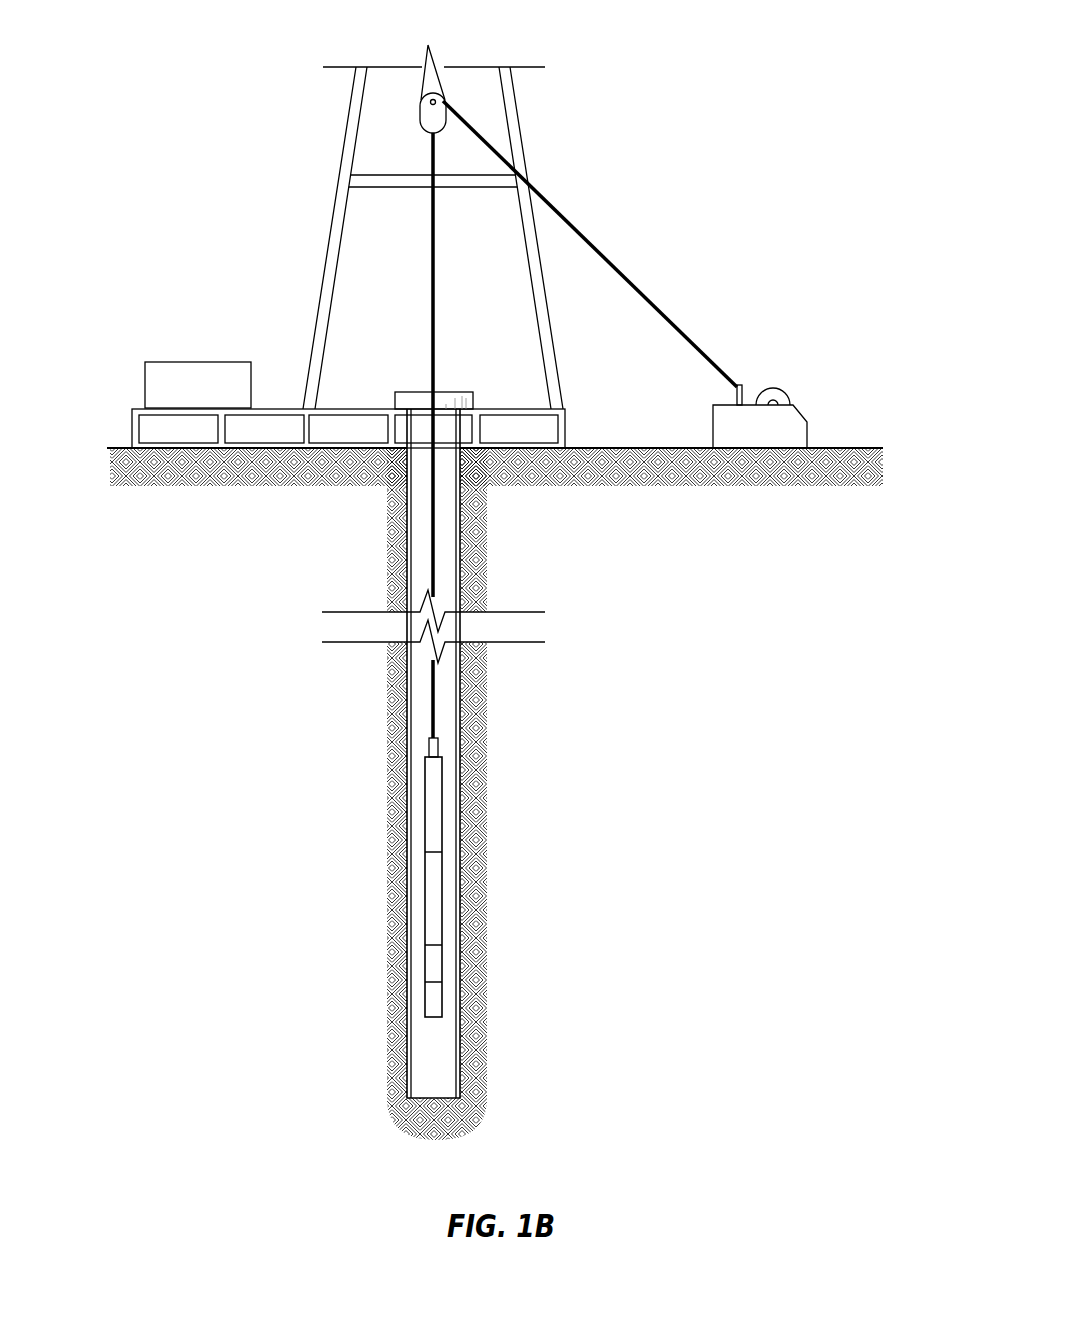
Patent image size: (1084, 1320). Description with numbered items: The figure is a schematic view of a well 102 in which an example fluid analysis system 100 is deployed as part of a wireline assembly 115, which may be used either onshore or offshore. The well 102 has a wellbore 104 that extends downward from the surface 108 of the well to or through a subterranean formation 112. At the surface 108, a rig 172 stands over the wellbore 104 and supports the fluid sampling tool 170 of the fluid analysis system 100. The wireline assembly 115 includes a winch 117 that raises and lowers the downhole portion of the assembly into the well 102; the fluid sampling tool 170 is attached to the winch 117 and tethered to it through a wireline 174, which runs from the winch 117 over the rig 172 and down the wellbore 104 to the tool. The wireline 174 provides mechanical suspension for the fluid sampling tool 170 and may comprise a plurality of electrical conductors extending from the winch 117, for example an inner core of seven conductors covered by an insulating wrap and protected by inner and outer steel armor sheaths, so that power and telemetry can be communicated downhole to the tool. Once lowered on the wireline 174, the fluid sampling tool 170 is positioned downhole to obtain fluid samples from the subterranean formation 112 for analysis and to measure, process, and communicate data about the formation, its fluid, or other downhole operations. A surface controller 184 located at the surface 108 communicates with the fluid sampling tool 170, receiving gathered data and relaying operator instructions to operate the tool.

The fluid analysis system 100 is at (208, 40).
The well 102 is at (478, 368).
The wellbore 104 is at (410, 758).
The surface 108 is at (823, 448).
The subterranean formation 112 is at (407, 1110).
The wireline assembly 115 is at (453, 776).
The winch 117 is at (713, 428).
The fluid sampling tool 170 is at (430, 963).
The rig 172 is at (527, 143).
The wireline 174 is at (643, 293).
The surface controller 184 is at (197, 362).